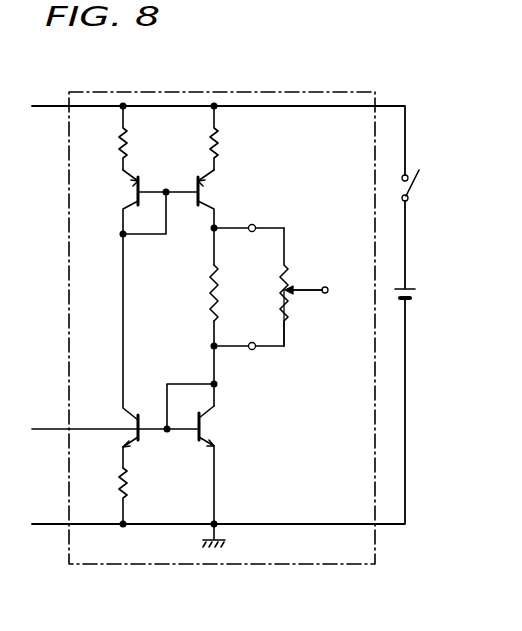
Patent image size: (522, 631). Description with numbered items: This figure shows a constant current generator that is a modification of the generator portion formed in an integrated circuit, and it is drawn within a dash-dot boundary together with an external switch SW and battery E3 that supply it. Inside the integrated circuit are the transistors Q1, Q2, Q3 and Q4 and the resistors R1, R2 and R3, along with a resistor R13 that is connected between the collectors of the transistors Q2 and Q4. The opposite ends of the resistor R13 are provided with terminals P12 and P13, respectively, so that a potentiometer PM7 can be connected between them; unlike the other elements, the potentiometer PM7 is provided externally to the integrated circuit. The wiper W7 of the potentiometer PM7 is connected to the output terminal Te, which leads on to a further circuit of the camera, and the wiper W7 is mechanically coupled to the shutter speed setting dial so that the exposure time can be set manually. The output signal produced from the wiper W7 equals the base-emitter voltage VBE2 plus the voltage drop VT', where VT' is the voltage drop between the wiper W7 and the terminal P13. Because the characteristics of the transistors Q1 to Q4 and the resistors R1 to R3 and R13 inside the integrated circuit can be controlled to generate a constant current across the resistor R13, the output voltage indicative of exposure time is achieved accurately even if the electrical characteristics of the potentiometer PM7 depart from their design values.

The resistor R2 is at (126, 146).
The resistor R3 is at (217, 146).
The transistor Q3 is at (133, 186).
The transistor Q4 is at (202, 192).
The terminal P12 is at (255, 225).
The terminal P13 is at (253, 350).
The resistor R13 is at (236, 270).
The potentiometer PM7 is at (308, 287).
The output terminal Te is at (328, 290).
The wiper W7 is at (332, 288).
The voltage drop VT' is at (307, 318).
The switch SW is at (429, 188).
The battery E3 is at (423, 297).
The transistor Q1 is at (110, 351).
The transistor Q2 is at (208, 454).
The resistor R1 is at (122, 487).
The base-emitter voltage VBE2 is at (207, 491).